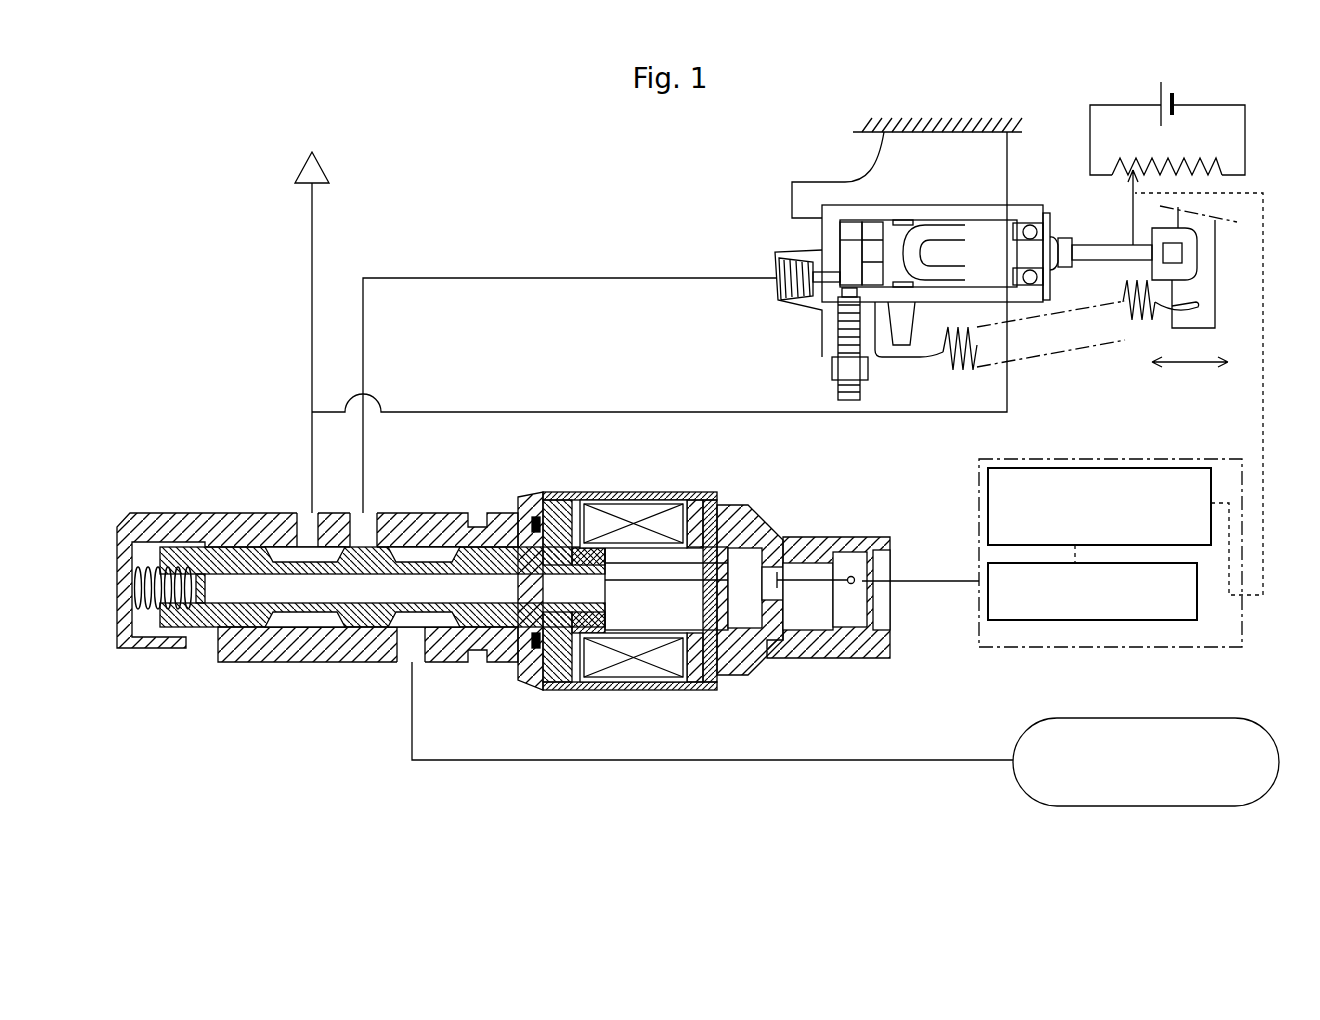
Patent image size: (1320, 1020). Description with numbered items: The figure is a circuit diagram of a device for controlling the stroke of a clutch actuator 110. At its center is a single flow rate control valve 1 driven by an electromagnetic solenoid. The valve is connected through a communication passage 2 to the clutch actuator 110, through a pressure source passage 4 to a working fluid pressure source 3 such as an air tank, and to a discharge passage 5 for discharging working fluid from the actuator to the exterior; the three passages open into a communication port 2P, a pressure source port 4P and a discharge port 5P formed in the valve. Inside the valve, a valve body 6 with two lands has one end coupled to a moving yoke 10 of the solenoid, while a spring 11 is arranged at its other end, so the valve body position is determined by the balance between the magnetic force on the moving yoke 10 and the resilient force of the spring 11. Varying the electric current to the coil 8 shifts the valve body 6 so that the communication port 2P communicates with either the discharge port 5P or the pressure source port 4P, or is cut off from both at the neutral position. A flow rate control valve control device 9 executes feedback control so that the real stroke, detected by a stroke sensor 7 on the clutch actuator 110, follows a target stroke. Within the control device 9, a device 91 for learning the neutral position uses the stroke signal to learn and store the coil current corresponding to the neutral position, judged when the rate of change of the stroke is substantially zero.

The flow rate control valve 1 is at (262, 668).
The communication passage 2 is at (597, 278).
The communication port 2P is at (371, 512).
The working fluid pressure source 3 is at (1200, 718).
The pressure source passage 4 is at (862, 762).
The pressure source port 4P is at (403, 664).
The discharge passage 5 is at (312, 215).
The discharge port 5P is at (303, 512).
The valve body 6 is at (418, 562).
The stroke sensor 7 is at (1120, 198).
The coil 8 is at (633, 516).
The flow rate control valve control device 9 is at (1057, 459).
The moving yoke 10 is at (631, 626).
The spring 11 is at (148, 610).
The device for learning the neutral position 91 is at (1146, 468).
The clutch actuator 110 is at (917, 205).